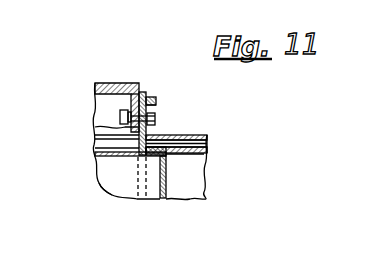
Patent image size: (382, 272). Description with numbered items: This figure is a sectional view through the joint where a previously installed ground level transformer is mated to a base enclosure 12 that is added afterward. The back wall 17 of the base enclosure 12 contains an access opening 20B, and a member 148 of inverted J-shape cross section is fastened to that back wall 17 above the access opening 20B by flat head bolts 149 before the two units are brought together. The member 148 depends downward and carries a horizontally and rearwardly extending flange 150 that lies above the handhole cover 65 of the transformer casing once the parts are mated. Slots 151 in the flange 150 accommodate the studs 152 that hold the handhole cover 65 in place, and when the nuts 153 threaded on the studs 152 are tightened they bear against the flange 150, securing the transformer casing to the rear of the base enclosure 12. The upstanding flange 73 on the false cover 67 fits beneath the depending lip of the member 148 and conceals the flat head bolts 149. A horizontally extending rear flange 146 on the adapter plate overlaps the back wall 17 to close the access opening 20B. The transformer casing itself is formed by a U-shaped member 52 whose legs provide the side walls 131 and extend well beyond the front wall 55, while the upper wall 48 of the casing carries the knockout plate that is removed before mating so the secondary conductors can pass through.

The base enclosure 12 is at (93, 80).
The back wall 17 is at (141, 83).
The access opening 20B is at (95, 127).
The flat head bolts 149 is at (123, 113).
The member of inverted J-shape cross section 148 is at (147, 103).
The upstanding flange 73 is at (157, 111).
The nuts 153 is at (166, 138).
The slots 151 is at (208, 140).
The false cover 67 is at (201, 135).
The horizontal flange 150 is at (100, 147).
The studs 152 is at (146, 157).
The upper wall 48 is at (97, 166).
The rear flange 146 is at (147, 198).
The front wall 55 is at (167, 198).
The U-shaped member 52 is at (211, 186).
The handhole cover 65 is at (208, 150).
The side walls 131 is at (105, 191).